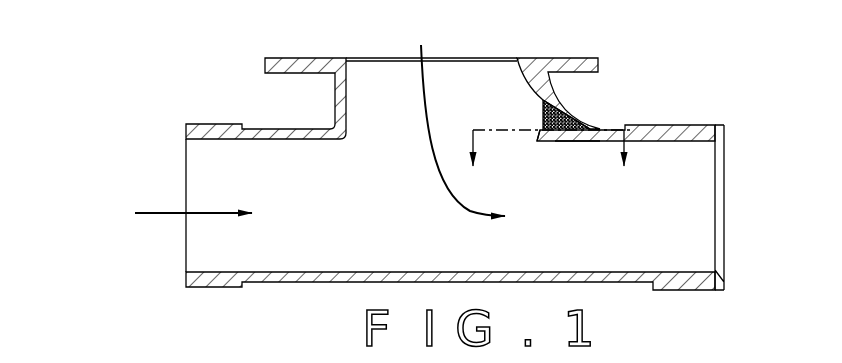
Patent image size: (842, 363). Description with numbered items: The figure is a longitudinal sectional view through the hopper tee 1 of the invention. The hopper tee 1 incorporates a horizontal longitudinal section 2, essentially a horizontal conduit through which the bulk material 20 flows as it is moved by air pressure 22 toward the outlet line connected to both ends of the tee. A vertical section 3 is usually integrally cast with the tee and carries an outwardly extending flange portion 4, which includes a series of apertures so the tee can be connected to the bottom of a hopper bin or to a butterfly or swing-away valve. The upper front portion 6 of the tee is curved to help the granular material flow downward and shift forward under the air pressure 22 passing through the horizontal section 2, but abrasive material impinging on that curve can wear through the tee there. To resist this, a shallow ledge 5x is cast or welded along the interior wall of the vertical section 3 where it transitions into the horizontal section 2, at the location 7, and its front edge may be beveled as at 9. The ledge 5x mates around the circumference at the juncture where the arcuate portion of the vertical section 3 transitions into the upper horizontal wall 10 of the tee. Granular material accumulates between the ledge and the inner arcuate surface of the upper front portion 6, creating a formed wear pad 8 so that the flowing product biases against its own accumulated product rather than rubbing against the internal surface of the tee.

The hopper tee 1 is at (232, 103).
The horizontal longitudinal section 2 is at (727, 284).
The vertical section 3 is at (347, 100).
The flange portion 4 is at (296, 58).
The ledge 5x is at (565, 143).
The upper front portion 6 is at (533, 88).
The transition location 7 is at (598, 126).
The formed wear pad 8 is at (547, 115).
The beveled front edge 9 is at (537, 137).
The upper horizontal wall 10 is at (680, 132).
The bulk material 20 is at (421, 93).
The air pressure 22 is at (158, 215).